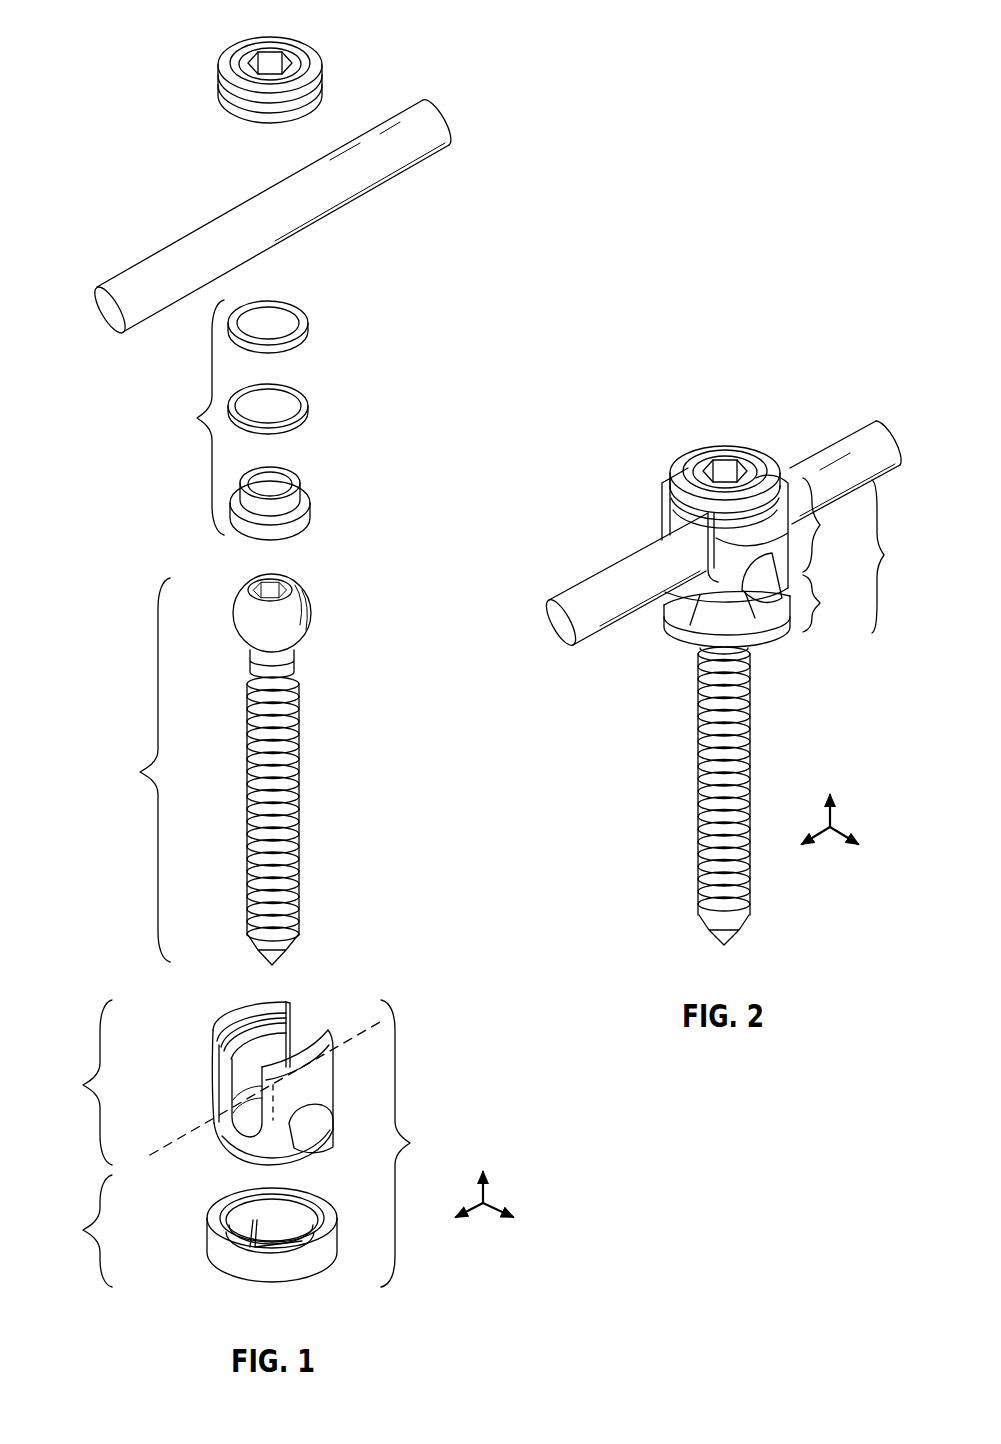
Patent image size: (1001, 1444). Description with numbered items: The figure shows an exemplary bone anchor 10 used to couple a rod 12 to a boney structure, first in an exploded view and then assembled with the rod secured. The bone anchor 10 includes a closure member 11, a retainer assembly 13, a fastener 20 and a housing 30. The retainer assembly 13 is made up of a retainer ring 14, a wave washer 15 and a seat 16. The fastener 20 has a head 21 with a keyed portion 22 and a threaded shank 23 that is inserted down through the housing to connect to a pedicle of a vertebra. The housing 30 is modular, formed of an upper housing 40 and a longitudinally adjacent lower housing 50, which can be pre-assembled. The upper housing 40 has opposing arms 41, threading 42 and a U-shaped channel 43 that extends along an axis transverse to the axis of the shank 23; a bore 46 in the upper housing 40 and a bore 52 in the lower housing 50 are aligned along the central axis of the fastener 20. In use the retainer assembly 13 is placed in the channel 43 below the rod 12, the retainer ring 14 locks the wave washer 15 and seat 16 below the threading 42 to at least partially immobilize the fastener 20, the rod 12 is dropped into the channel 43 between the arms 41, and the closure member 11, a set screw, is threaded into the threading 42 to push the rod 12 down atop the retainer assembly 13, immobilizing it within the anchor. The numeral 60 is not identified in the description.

In FIG. 1, the bone anchor 10 is at (155, 33).
In FIG. 2, the bone anchor 10 is at (590, 438).
In FIG. 1, the closure member 11 is at (228, 76).
In FIG. 2, the closure member 11 is at (762, 466).
In FIG. 1, the rod 12 is at (152, 268).
In FIG. 2, the rod 12 is at (605, 588).
In FIG. 1, the retainer assembly 13 is at (265, 419).
In FIG. 1, the retainer ring 14 is at (306, 325).
In FIG. 1, the wave washer 15 is at (306, 408).
In FIG. 1, the seat 16 is at (298, 481).
In FIG. 1, the fastener 20 is at (235, 766).
In FIG. 2, the fastener 20 is at (765, 735).
In FIG. 1, the head 21 is at (300, 612).
In FIG. 1, the keyed portion 22 is at (290, 590).
In FIG. 1, the shank 23 is at (250, 752).
In FIG. 1, the housing 30 is at (247, 1157).
In FIG. 2, the housing 30 is at (791, 557).
In FIG. 1, the upper housing 40 is at (216, 1085).
In FIG. 2, the upper housing 40 is at (759, 546).
In FIG. 1, the opposing arms 41 is at (225, 1013).
In FIG. 1, the threading 42 is at (286, 1010).
In FIG. 1, the U-shaped channel 43 is at (185, 1137).
In FIG. 1, the bore 46 is at (250, 1122).
In FIG. 1, the lower housing 50 is at (192, 1249).
In FIG. 2, the lower housing 50 is at (760, 611).
In FIG. 1, the bore 52 is at (297, 1225).
In FIG. 1, the bottom rim of receiver 60 is at (292, 1166).